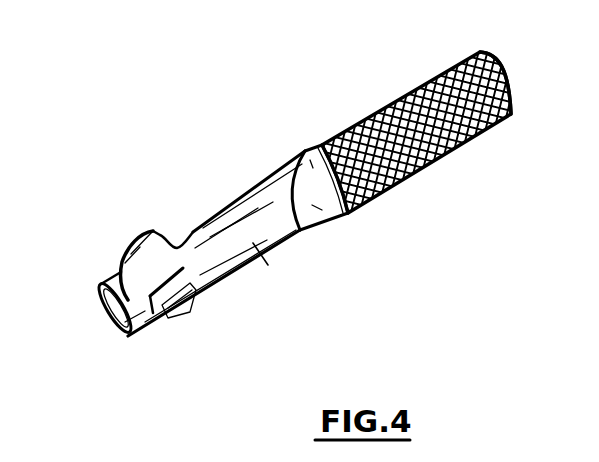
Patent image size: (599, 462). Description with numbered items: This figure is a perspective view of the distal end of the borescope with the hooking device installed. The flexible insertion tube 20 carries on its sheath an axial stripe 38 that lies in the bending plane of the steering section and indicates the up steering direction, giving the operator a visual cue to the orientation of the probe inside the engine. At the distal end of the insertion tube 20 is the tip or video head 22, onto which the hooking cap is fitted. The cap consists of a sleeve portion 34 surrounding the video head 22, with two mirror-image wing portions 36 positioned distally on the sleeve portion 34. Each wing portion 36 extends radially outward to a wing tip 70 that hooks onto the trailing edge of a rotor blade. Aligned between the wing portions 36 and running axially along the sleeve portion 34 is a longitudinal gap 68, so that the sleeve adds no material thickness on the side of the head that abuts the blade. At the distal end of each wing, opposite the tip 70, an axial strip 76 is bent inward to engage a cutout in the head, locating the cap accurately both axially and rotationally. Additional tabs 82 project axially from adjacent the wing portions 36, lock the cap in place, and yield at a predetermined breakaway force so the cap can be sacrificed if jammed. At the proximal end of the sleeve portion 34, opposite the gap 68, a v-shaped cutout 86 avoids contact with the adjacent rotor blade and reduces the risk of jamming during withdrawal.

The insertion tube 20 is at (385, 108).
The video head 22 is at (292, 186).
The sleeve portion 34 is at (253, 243).
The wing portions 36 is at (130, 252).
The stripe 38 is at (462, 146).
The longitudinal gap 68 is at (243, 197).
The wing tip 70 is at (152, 232).
The axial strip 76 is at (150, 312).
The tabs 82 is at (183, 305).
The v-shaped cutout 86 is at (298, 245).